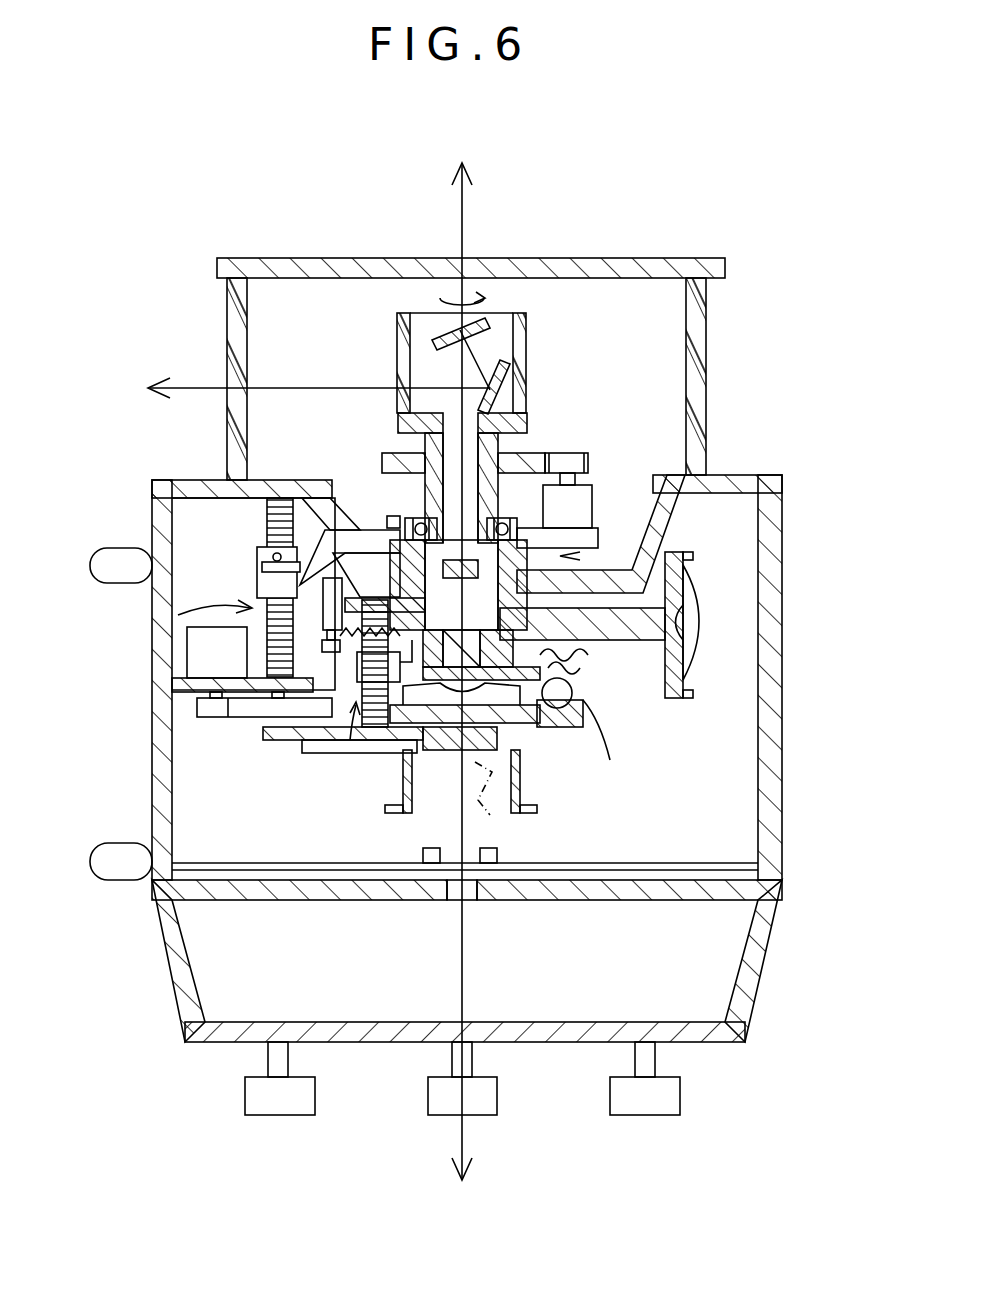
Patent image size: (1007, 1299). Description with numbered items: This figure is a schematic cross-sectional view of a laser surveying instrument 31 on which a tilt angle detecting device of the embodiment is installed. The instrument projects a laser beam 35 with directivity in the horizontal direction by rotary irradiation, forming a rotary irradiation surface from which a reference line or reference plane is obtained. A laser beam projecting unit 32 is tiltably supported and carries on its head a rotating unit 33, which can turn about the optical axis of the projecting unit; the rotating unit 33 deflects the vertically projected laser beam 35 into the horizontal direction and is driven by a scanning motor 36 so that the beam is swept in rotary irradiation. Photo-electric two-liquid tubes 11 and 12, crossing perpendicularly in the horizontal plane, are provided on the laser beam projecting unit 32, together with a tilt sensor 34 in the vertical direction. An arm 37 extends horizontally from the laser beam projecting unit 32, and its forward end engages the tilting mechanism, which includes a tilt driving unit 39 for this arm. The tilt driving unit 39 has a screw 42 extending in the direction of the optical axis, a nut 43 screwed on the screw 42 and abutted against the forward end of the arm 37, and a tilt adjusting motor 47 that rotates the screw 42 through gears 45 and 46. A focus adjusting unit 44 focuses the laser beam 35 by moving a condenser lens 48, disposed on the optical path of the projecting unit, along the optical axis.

The laser surveying instrument 31 is at (210, 196).
The rotating unit 33 is at (520, 362).
The laser beam 35 is at (272, 385).
The arm 37 is at (365, 522).
The condenser lens 48 is at (470, 545).
The scanning motor 36 is at (595, 490).
The screw 42 is at (268, 520).
The nut 43 is at (262, 570).
The tilt driving unit 39 is at (175, 612).
The laser beam projecting unit 32 is at (590, 558).
The tilt adjusting motor 47 is at (185, 655).
The tilt sensor 34 is at (708, 665).
The photo-electric two-liquid tube 12 is at (575, 692).
The gear 45 is at (205, 725).
The gear 46 is at (247, 705).
The focus adjusting unit 44 is at (355, 705).
The photo-electric two-liquid tube 11 is at (415, 742).